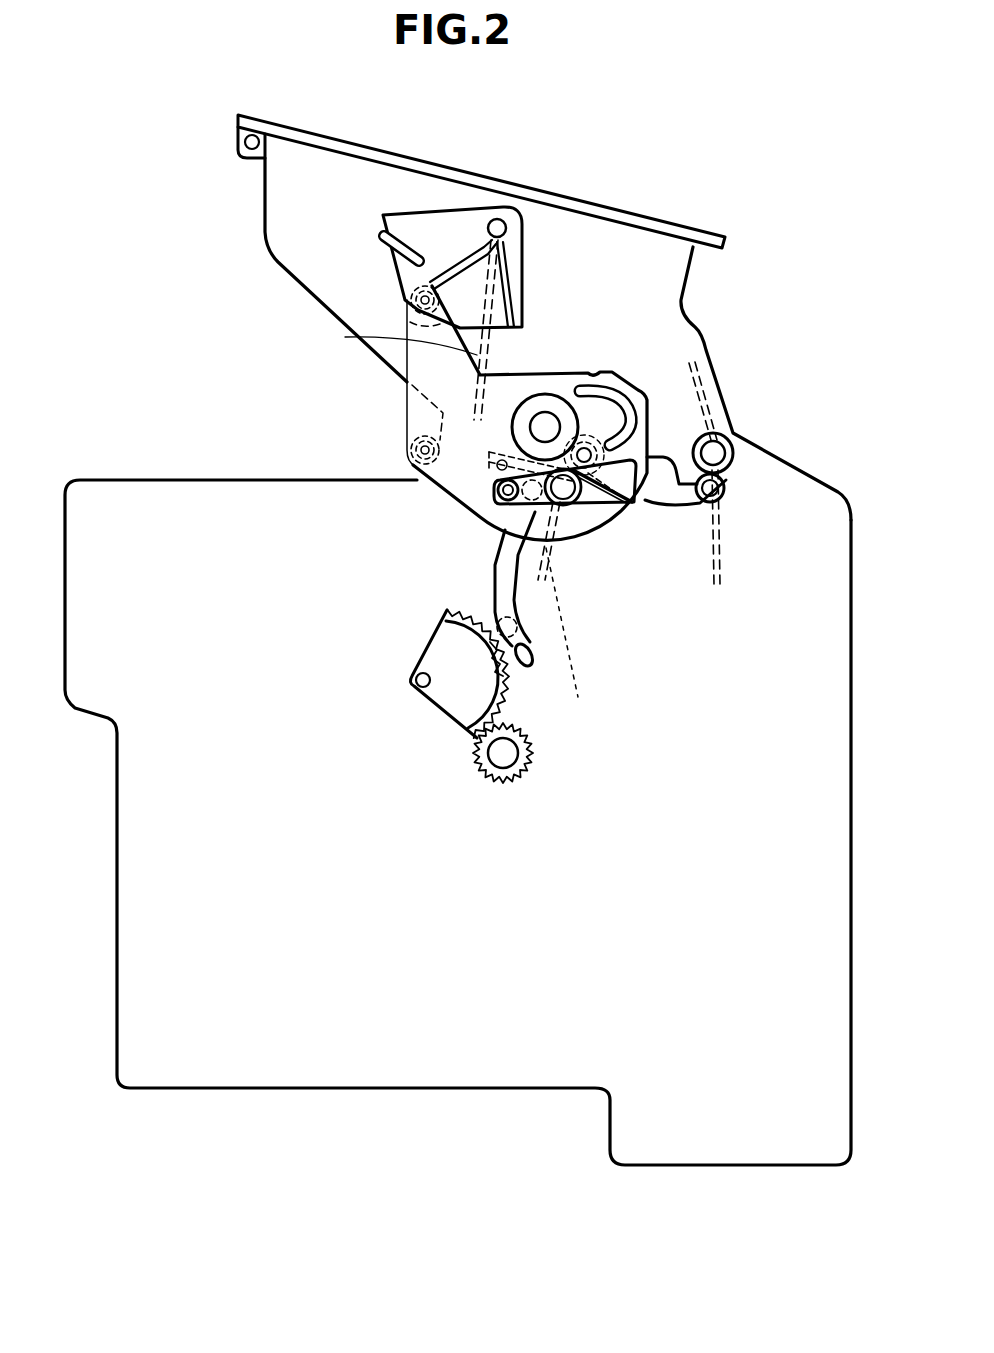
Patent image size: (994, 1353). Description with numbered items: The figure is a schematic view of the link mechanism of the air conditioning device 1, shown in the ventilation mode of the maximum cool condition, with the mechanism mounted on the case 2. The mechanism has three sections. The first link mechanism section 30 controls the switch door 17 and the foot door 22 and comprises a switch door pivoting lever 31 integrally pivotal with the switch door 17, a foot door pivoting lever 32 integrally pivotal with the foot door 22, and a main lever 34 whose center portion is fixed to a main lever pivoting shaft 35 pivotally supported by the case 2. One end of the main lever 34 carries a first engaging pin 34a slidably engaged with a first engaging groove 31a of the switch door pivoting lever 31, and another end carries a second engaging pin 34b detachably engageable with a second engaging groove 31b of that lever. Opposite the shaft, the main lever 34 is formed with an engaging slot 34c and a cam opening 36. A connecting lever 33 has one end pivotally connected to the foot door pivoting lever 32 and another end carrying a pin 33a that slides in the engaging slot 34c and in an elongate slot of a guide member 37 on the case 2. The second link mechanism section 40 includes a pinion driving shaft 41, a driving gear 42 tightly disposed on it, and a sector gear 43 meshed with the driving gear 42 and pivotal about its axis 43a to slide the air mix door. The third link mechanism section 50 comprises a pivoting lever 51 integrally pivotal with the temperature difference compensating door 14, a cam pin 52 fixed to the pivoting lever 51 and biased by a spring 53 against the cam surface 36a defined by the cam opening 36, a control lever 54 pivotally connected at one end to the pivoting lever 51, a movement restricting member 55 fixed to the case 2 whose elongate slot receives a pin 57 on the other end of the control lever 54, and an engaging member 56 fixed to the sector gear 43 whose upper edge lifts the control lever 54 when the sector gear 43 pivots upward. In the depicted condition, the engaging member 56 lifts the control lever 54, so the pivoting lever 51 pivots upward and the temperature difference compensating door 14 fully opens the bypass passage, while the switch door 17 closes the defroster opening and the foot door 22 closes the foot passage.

The air conditioning device 1 is at (571, 193).
The case 2 is at (153, 478).
The temperature difference compensating door 14 is at (545, 585).
The switch door 17 is at (345, 337).
The foot door 22 is at (700, 388).
The first link mechanism section 30 is at (524, 376).
The switch door pivoting lever 31 is at (512, 255).
The first engaging groove 31a is at (500, 303).
The second engaging groove 31b is at (380, 228).
The foot door pivoting lever 32 is at (722, 490).
The connecting lever 33 is at (658, 465).
The pin 33a is at (590, 447).
The main lever 34 is at (462, 430).
The first engaging pin 34a is at (420, 297).
The second engaging pin 34b is at (403, 442).
The engaging slot 34c is at (600, 395).
The main lever pivoting shaft 35 is at (548, 420).
The cam opening 36 is at (594, 497).
The cam surface 36a is at (580, 533).
The guide member 37 is at (640, 495).
The second link mechanism section 40 is at (422, 638).
The pinion driving shaft 41 is at (505, 757).
The driving gear 42 is at (495, 768).
The sector gear 43 is at (455, 697).
The axis 43a is at (415, 680).
The third link mechanism section 50 is at (494, 544).
The pivoting lever 51 is at (495, 470).
The cam pin 52 is at (505, 492).
The spring 53 is at (655, 512).
The control lever 54 is at (520, 635).
The movement restricting member 55 is at (533, 667).
The engaging member 56 is at (518, 662).
The pin 57 is at (581, 634).